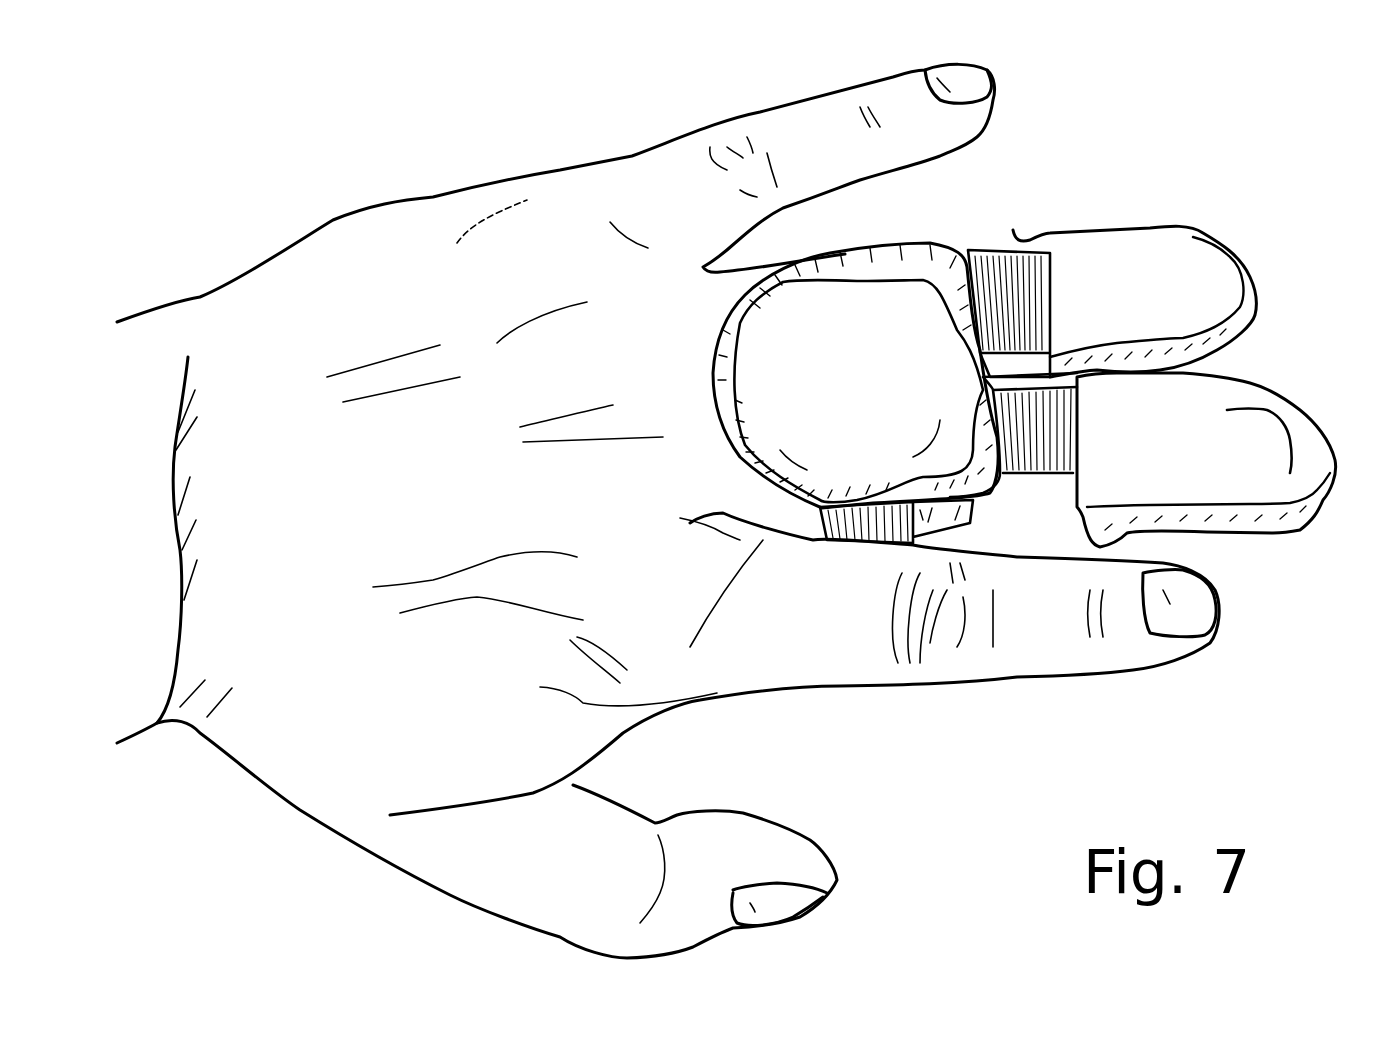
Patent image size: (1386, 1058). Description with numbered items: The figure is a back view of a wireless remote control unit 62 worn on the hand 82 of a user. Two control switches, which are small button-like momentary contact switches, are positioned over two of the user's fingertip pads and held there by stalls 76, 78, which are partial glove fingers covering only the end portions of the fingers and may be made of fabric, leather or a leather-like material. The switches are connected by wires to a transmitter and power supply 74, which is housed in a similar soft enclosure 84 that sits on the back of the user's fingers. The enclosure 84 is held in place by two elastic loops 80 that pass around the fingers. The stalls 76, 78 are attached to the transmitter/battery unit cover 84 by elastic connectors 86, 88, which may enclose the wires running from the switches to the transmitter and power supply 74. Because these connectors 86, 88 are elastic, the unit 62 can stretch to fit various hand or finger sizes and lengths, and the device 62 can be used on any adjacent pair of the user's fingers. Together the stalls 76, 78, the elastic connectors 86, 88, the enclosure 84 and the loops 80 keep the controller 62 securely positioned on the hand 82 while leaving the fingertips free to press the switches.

The wireless remote control unit 62 is at (1240, 173).
The transmitter and power supply 74 is at (890, 320).
The stall 76 is at (1243, 257).
The stall 78 is at (1313, 410).
The elastic loop 80 is at (865, 527).
The hand 82 is at (413, 142).
The soft enclosure 84 is at (845, 254).
The elastic connector 86 is at (1007, 307).
The elastic connector 88 is at (1033, 450).